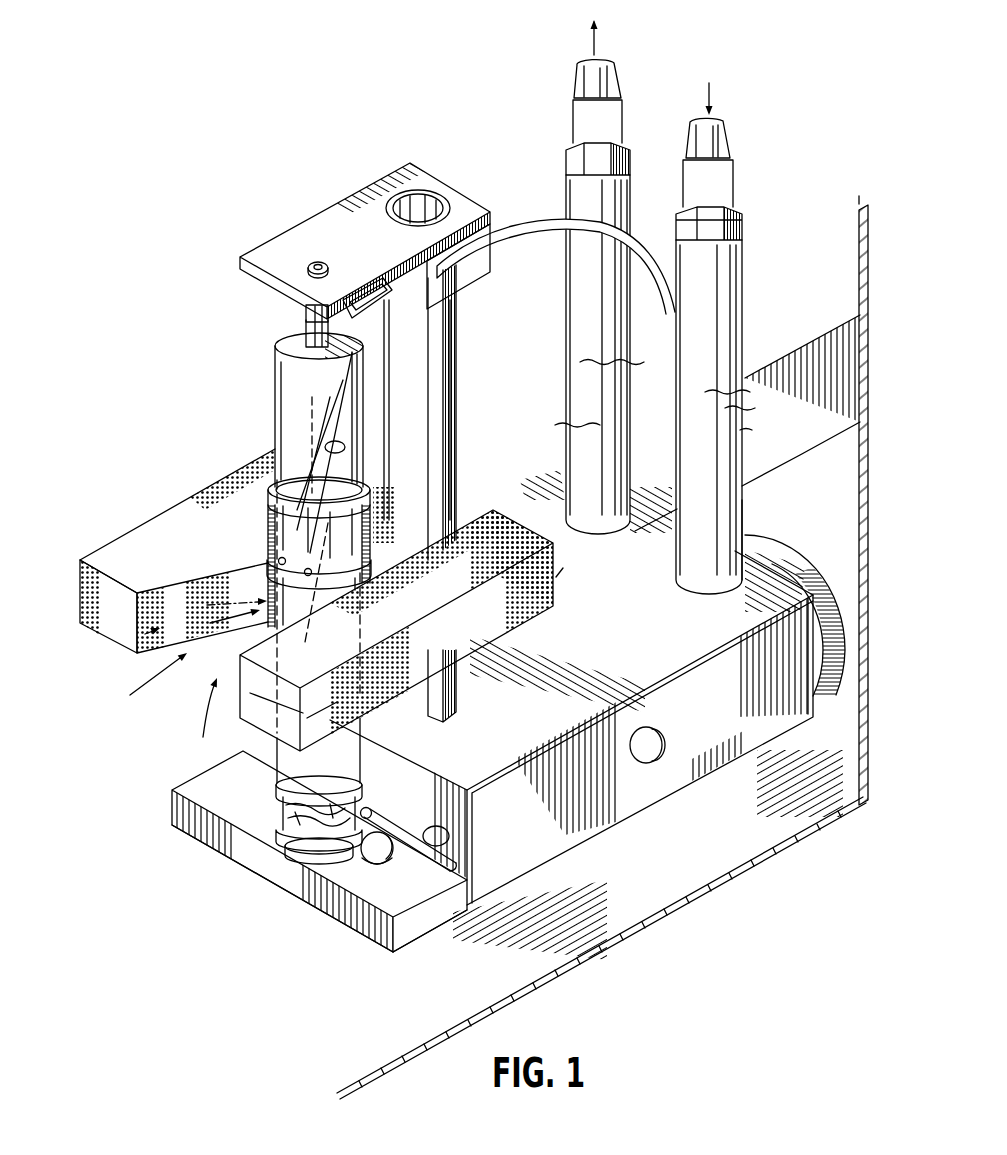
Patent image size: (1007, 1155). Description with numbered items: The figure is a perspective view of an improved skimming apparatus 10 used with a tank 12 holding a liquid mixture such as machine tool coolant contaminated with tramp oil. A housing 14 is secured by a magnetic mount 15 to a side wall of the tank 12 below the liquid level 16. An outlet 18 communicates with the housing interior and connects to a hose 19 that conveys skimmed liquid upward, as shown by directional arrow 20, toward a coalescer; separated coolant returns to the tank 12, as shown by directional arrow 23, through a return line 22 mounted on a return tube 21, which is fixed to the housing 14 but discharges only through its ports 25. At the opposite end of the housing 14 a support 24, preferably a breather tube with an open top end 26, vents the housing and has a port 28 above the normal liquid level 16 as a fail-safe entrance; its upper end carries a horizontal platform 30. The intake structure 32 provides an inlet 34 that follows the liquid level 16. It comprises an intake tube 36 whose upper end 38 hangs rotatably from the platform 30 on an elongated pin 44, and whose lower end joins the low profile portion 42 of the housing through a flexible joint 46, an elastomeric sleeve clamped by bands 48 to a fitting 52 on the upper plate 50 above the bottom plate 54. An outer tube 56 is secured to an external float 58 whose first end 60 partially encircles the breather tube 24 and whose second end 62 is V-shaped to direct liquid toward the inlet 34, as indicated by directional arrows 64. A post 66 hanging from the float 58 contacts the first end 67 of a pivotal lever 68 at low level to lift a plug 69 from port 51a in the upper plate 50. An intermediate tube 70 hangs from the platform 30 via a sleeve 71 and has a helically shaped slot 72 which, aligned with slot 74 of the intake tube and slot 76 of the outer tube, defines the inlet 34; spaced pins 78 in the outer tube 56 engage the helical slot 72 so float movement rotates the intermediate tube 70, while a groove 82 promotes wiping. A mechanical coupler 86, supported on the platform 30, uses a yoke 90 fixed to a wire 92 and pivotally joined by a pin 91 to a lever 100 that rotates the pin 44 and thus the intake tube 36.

The skimming apparatus 10 is at (140, 162).
The tank 12 is at (627, 935).
The housing 14 is at (573, 862).
The mount 15 is at (791, 549).
The liquid level 16 is at (797, 467).
The outlet 18 is at (573, 190).
The hose 19 is at (573, 112).
The directional arrow 20 is at (598, 47).
The return tube 21 is at (743, 327).
The return line 22 is at (737, 183).
The directional arrow 23 is at (714, 93).
The support 24 is at (457, 413).
The ports 25 is at (744, 268).
The open top end 26 is at (425, 200).
The port 28 is at (456, 340).
The horizontal platform 30 is at (332, 212).
The intake structure 32 is at (254, 404).
The inlet 34 is at (248, 600).
The intake tube 36 is at (340, 437).
The upper end 38 is at (337, 394).
The low profile adjacent portion 42 is at (343, 909).
The elongated pin 44 is at (318, 261).
The flexible joint 46 is at (283, 810).
The bands 48 is at (276, 786).
The upper plate 50 is at (230, 838).
The port 51a is at (372, 862).
The fitting 52 is at (312, 850).
The bottom plate 54 is at (436, 927).
The outer tube 56 is at (268, 502).
The external float 58 is at (142, 520).
The first end 60 is at (493, 510).
The second end 62 is at (117, 552).
The directional arrows 64 is at (85, 641).
The post 66 is at (457, 703).
The first end 67 is at (470, 858).
The pivotal lever 68 is at (395, 828).
The plug 69 is at (377, 852).
The intermediate tube 70 is at (290, 427).
The sleeve 71 is at (306, 308).
The helically shaped slot 72 is at (352, 418).
The slot 74 is at (345, 452).
The slot 76 is at (268, 558).
The spaced pins 78 is at (310, 576).
The elongated groove 82 is at (340, 765).
The mechanical coupler 86 is at (540, 233).
The yoke 90 is at (389, 328).
The pin 91 is at (352, 294).
The wire 92 is at (397, 273).
The lever 100 is at (306, 328).